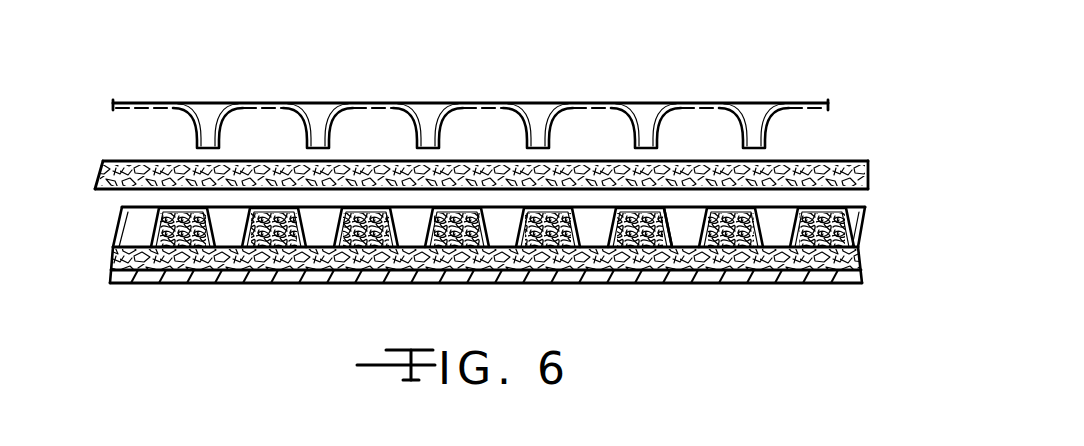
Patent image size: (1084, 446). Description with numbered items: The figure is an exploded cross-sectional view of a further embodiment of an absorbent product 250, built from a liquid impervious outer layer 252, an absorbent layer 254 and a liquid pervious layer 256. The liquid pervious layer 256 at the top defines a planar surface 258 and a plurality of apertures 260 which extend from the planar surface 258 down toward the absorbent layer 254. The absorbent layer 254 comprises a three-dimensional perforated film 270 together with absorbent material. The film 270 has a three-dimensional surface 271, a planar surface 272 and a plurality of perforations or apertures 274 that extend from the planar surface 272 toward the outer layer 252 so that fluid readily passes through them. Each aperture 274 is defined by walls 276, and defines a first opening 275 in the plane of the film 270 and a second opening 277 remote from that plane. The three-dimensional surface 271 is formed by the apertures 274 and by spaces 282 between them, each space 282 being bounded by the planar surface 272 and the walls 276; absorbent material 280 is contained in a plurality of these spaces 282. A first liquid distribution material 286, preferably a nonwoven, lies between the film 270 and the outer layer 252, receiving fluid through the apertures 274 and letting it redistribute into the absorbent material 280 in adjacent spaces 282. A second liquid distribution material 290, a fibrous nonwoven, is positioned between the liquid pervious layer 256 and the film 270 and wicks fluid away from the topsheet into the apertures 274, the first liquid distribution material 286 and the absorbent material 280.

The absorbent product 250 is at (455, 86).
The liquid impervious outer layer 252 is at (237, 283).
The absorbent layer 254 is at (104, 238).
The liquid pervious layer 256 is at (176, 94).
The planar surface 258 is at (369, 104).
The apertures 260 is at (316, 118).
The three-dimensional perforated film 270 is at (510, 230).
The three-dimensional surface 271 is at (275, 212).
The planar surface 272 is at (726, 210).
The apertures 274 is at (778, 228).
The first opening 275 is at (595, 198).
The walls 276 is at (673, 227).
The second opening 277 is at (598, 242).
The absorbent material 280 is at (750, 250).
The spaces 282 is at (350, 252).
The first liquid distribution material 286 is at (887, 223).
The second liquid distribution material 290 is at (833, 162).